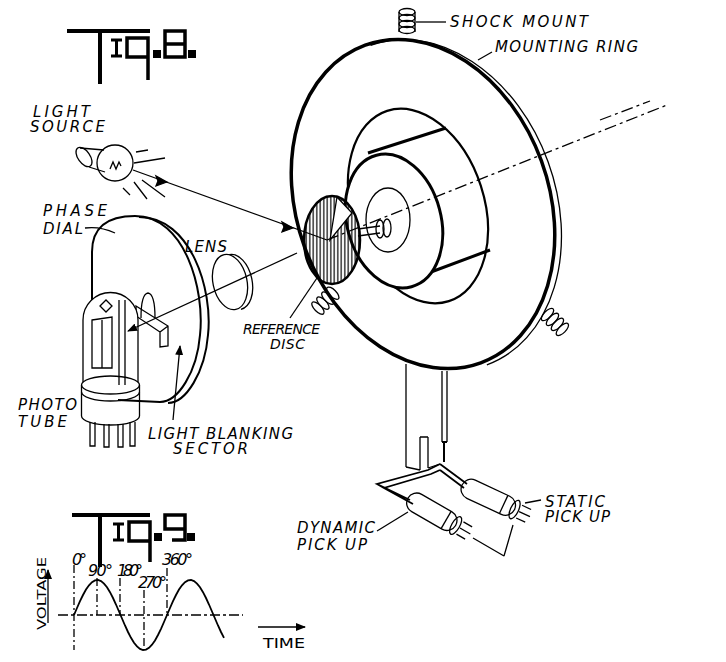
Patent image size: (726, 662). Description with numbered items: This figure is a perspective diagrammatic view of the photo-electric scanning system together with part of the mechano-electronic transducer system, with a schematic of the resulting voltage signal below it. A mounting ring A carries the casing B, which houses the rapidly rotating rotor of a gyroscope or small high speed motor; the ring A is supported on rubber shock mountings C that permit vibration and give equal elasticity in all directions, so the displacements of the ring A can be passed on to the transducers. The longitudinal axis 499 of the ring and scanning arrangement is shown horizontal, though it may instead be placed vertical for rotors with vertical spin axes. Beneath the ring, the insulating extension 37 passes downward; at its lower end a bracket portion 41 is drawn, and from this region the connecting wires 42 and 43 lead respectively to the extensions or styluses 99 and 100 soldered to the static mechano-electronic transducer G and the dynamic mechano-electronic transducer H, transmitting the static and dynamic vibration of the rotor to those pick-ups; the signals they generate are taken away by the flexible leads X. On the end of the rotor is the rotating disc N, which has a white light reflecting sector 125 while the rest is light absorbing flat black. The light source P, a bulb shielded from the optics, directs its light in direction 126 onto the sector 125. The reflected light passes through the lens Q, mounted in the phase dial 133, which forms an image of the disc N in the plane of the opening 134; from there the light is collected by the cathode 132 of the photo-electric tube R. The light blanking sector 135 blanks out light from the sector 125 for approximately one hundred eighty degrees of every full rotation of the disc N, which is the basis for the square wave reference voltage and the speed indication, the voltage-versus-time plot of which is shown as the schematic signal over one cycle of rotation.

The light reflecting sector 125 is at (346, 197).
The direction of light 126 is at (193, 192).
The cathode 132 is at (97, 335).
The phase dial 133 is at (197, 370).
The opening 134 is at (147, 294).
The light blanking sector 135 is at (162, 348).
The insulating extension 37 is at (417, 392).
The bracket flange 41 is at (415, 448).
The connecting wire 42 is at (442, 460).
The connecting wire 43 is at (387, 482).
The extension or stylus 99 is at (447, 477).
The extension or stylus 100 is at (395, 526).
The longitudinal axis 499 is at (622, 122).
The mounting ring A is at (520, 174).
The casing B is at (468, 213).
The rubber shock mounting C is at (397, 20).
The static mechano-electronic transducer G is at (481, 488).
The dynamic mechano-electronic transducer H is at (425, 522).
The disc N is at (321, 231).
The light source P is at (122, 157).
The lens Q is at (233, 256).
The photo-electric tube R is at (81, 369).
The flexible leads X is at (493, 554).